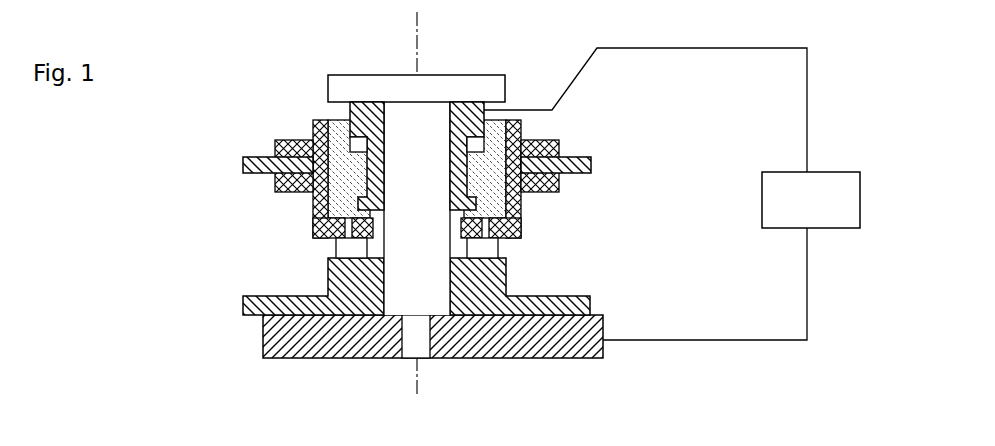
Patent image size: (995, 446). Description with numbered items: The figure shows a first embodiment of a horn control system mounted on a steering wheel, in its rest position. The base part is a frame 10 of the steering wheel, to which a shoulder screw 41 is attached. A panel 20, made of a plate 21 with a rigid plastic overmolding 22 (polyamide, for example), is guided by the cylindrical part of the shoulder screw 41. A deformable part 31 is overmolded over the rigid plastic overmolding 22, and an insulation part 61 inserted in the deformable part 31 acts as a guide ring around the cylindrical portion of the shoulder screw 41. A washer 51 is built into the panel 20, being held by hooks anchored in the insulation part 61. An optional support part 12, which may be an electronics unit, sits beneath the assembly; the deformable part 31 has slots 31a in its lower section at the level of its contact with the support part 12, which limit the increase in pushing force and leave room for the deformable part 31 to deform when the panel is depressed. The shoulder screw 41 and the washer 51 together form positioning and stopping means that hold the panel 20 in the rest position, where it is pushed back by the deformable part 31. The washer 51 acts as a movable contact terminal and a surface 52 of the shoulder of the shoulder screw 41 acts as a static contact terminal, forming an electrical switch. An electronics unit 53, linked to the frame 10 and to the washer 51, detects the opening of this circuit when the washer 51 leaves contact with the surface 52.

The frame 10 is at (595, 355).
The support part 12 is at (565, 292).
The panel 20 is at (601, 152).
The plate 21 is at (582, 152).
The rigid plastic overmolding 22 is at (548, 140).
The deformable part 31 is at (340, 122).
The slots 31a is at (336, 255).
The shoulder screw 41 is at (430, 358).
The washer 51 is at (352, 102).
The surface 52 is at (393, 102).
The electronics unit 53 is at (672, 194).
The insulation part 61 is at (513, 242).